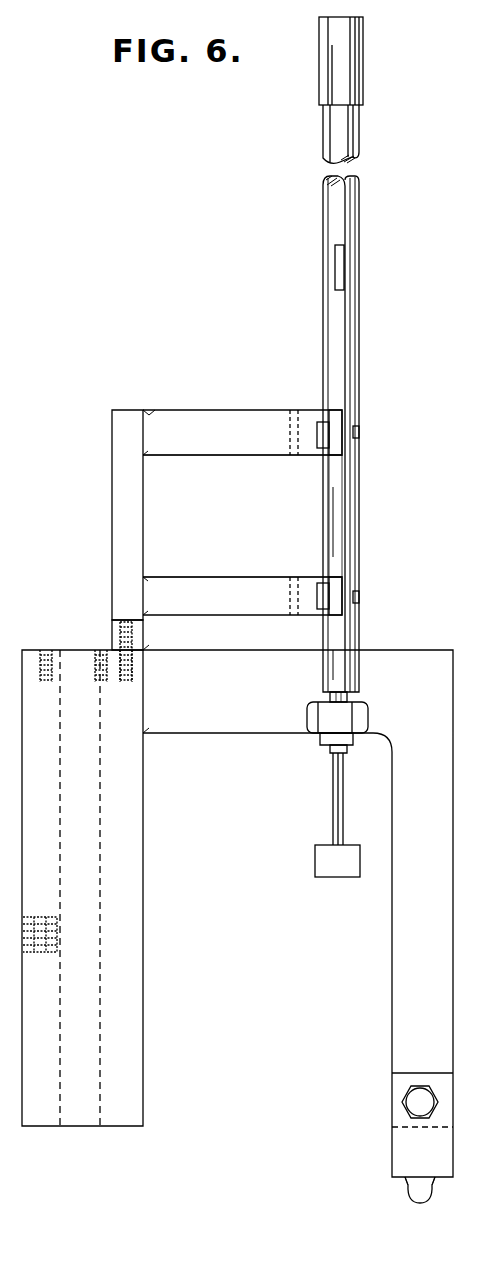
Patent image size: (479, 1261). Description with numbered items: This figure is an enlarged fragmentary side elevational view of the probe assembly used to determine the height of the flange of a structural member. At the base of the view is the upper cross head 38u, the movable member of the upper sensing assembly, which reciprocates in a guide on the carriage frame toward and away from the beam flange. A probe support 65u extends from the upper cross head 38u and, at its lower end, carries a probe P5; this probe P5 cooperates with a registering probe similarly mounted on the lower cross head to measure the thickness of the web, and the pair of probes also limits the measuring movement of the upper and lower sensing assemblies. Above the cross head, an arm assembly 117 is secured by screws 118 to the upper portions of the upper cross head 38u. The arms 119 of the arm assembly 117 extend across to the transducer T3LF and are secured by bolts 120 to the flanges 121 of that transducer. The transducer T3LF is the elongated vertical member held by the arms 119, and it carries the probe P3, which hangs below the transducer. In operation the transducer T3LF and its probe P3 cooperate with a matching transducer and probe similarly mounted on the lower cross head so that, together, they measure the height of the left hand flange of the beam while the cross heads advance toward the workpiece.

The transducer T3LF is at (362, 352).
The arm assembly 117 is at (110, 510).
The screws 118 is at (118, 632).
The arms 119 is at (245, 455).
The bolts 120 is at (360, 433).
The flanges 121 is at (338, 576).
The probe support 65u is at (264, 701).
The upper cross head 38u is at (143, 872).
The probe P3 is at (338, 878).
The probe P5 is at (420, 1204).